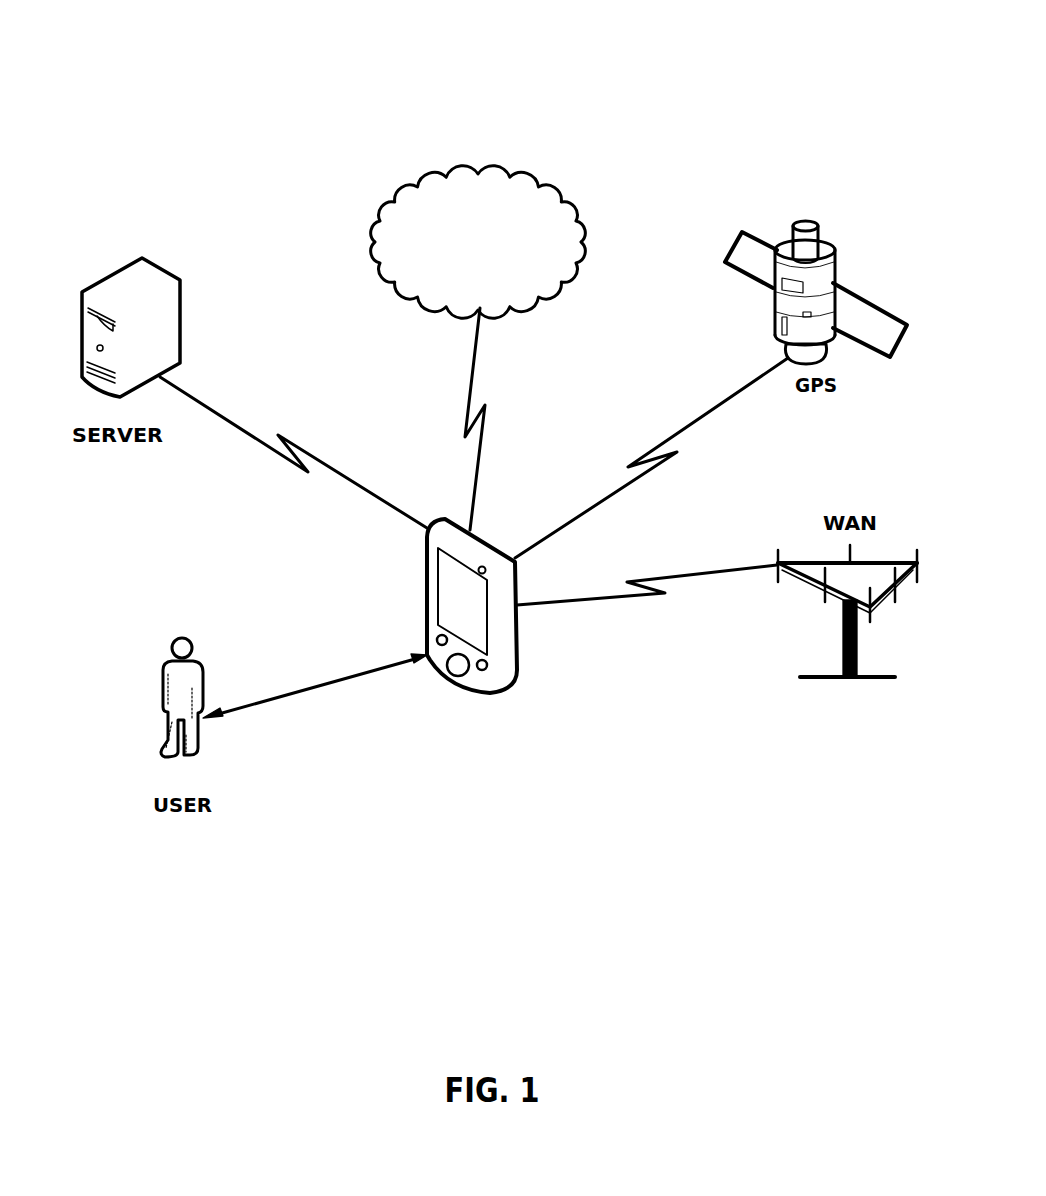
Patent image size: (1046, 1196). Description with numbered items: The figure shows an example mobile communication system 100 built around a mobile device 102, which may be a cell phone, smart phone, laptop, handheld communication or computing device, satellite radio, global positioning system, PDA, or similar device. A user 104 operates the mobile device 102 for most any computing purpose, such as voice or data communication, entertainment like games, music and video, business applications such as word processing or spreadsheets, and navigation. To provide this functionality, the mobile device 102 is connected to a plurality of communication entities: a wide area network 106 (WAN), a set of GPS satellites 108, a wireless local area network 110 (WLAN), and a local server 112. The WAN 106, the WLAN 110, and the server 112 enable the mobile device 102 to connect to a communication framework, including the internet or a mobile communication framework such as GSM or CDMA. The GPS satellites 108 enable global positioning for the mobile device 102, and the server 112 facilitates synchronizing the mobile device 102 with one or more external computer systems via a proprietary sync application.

The mobile communication system 100 is at (638, 49).
The mobile device 102 is at (517, 583).
The user 104 is at (203, 677).
The wide area network 106 is at (857, 660).
The GPS satellites 108 is at (817, 232).
The wireless local area network 110 is at (478, 173).
The local server 112 is at (160, 265).